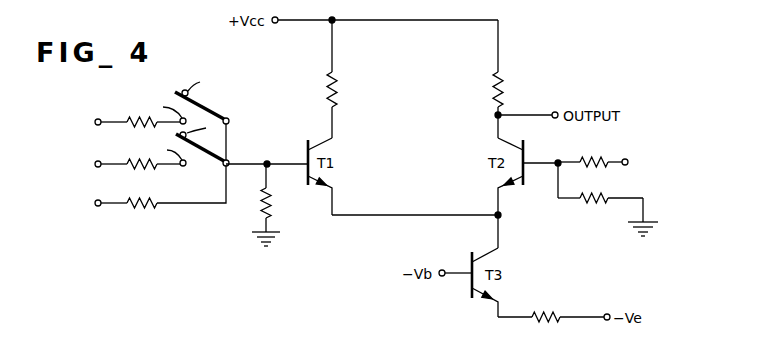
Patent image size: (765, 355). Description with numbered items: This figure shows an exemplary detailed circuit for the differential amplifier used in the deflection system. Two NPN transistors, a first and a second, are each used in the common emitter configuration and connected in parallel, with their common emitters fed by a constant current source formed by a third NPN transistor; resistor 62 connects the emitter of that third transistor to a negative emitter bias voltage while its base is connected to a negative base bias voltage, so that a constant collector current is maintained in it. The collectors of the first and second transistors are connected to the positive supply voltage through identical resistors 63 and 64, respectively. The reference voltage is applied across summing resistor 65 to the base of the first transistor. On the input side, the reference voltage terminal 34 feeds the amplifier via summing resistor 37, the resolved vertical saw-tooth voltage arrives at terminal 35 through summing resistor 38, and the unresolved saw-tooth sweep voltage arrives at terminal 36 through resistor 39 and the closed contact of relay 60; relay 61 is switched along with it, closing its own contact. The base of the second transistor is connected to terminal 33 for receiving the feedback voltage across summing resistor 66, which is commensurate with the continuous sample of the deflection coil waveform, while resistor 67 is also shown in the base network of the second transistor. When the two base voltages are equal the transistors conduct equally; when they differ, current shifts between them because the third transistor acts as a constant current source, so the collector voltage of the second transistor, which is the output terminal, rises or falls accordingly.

The input 33 is at (629, 161).
The terminal 34 is at (95, 203).
The terminal 35 is at (95, 164).
The terminal 36 is at (95, 122).
The summing resistor 37 is at (131, 197).
The summing resistor 38 is at (133, 157).
The resistor 39 is at (132, 118).
The relay 60 is at (195, 108).
The relay 61 is at (195, 148).
The resistor 62 is at (560, 313).
The resistor 63 is at (335, 88).
The resistor 64 is at (502, 88).
The summing resistor 65 is at (275, 207).
The summing resistor 66 is at (603, 195).
The resistor 67 is at (583, 157).